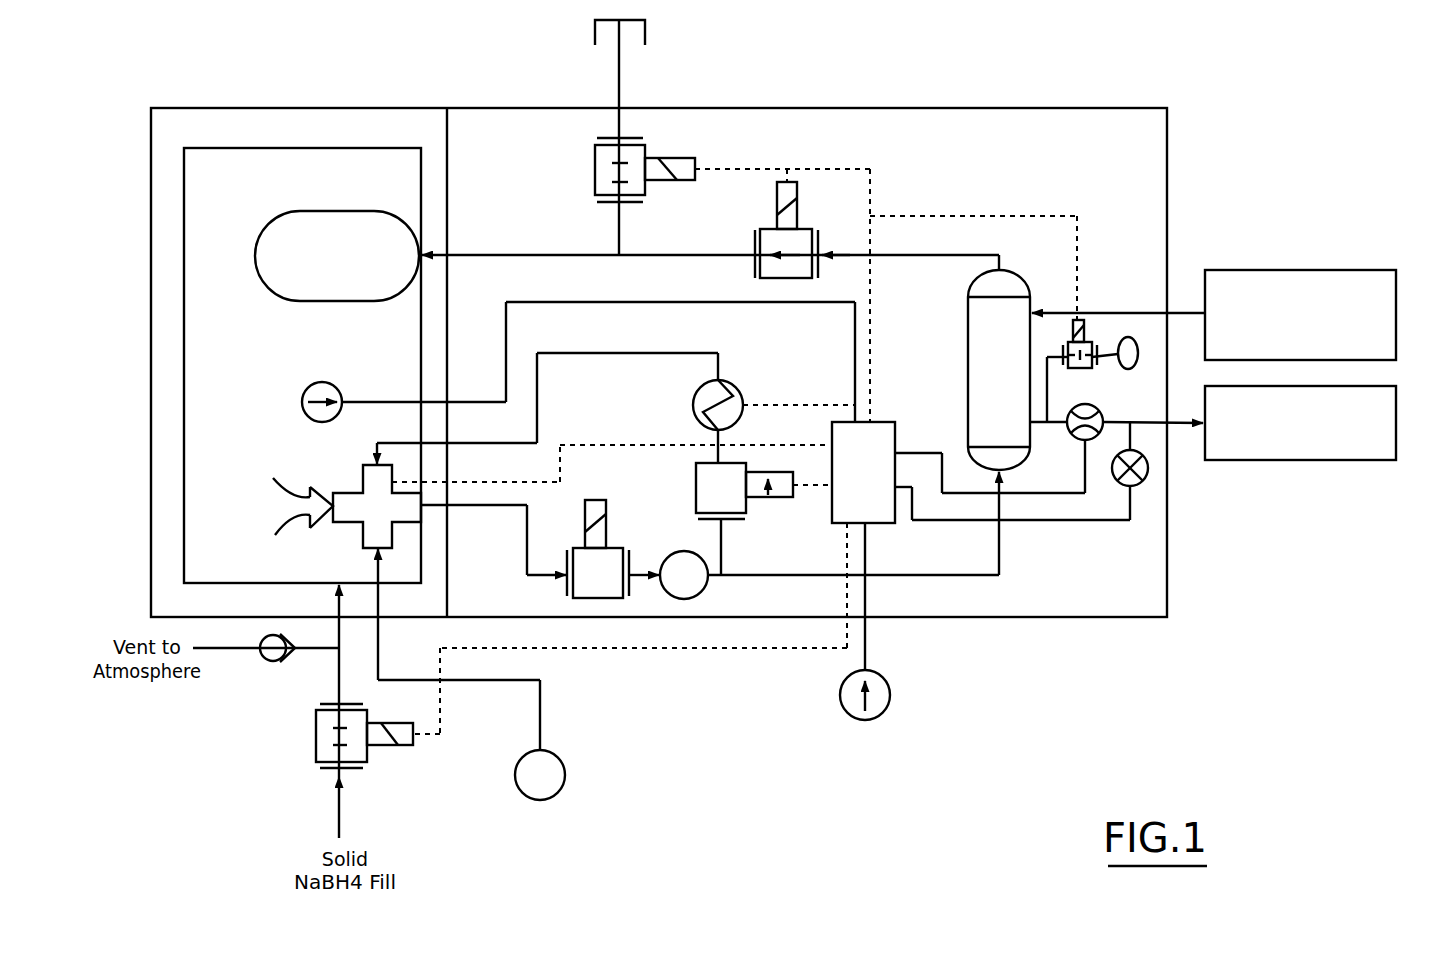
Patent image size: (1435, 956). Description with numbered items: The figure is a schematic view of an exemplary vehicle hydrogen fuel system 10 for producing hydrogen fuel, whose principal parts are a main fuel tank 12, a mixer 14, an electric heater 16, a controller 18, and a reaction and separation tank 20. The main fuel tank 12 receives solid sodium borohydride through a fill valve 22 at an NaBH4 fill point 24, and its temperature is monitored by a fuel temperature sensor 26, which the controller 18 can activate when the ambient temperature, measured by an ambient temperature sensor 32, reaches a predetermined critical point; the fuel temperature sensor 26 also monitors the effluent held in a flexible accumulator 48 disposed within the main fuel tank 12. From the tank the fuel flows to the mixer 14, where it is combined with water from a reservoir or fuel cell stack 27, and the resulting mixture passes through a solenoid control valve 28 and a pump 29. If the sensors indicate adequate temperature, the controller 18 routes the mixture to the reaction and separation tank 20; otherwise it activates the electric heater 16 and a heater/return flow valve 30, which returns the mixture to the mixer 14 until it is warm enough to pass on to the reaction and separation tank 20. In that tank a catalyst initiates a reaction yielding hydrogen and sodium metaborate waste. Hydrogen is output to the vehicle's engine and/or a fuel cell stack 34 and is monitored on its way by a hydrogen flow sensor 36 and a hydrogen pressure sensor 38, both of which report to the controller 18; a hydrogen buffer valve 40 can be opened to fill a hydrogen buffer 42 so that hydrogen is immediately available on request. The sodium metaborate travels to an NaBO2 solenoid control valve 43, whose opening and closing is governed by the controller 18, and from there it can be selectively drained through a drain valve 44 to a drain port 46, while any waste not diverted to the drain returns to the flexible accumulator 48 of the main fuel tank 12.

The hydrogen fuel system 10 is at (425, 60).
The main fuel tank 12 is at (240, 547).
The mixer 14 is at (362, 483).
The electric heater 16 is at (735, 392).
The controller 18 is at (878, 494).
The reaction and separation tank 20 is at (967, 389).
The fill valve 22 is at (410, 818).
The NaBH4 fill point 24 is at (413, 746).
The fuel temperature sensor 26 is at (311, 388).
The fuel cell stack 27 is at (565, 762).
The solenoid control valve 28 is at (618, 548).
The pump 29 is at (690, 541).
The heater/return flow valve 30 is at (746, 508).
The ambient temperature sensor 32 is at (888, 682).
The fuel cell stack 34 is at (1276, 461).
The hydrogen flow sensor 36 is at (1070, 438).
The hydrogen pressure sensor 38 is at (1148, 475).
The hydrogen buffer valve 40 is at (1085, 369).
The hydrogen buffer 42 is at (1130, 338).
The NaBO2 solenoid control valve 43 is at (820, 236).
The drain valve 44 is at (594, 169).
The drain port 46 is at (646, 38).
The flexible accumulator 48 is at (356, 276).